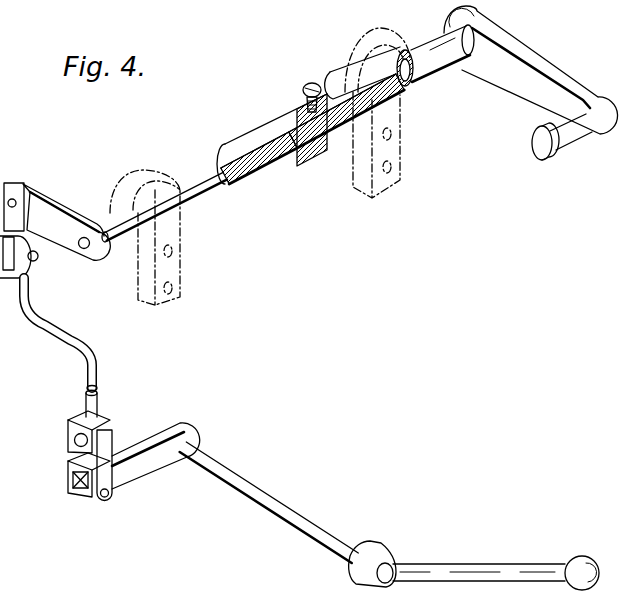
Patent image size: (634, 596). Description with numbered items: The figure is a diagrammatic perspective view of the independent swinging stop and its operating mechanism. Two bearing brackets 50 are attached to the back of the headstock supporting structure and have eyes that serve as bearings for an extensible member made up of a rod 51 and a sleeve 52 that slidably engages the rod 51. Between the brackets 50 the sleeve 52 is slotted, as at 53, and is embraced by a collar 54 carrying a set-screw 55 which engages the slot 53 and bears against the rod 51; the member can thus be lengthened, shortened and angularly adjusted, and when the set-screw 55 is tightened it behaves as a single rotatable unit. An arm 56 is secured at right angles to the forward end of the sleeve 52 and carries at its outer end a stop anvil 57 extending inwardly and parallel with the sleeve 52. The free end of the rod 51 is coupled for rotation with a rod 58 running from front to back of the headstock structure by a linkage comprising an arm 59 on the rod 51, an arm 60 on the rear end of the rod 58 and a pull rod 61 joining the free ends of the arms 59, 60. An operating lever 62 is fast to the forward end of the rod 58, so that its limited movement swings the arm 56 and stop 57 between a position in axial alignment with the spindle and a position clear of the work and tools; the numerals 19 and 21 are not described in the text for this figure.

The shaft 19 is at (353, 0).
The tube 21 is at (412, 0).
The bearing bracket 50 is at (163, 275).
The rod 51 is at (123, 230).
The sleeve 52 is at (253, 173).
The slot 53 is at (300, 115).
The collar 54 is at (287, 107).
The set-screw 55 is at (322, 85).
The arm 56 is at (505, 70).
The stop anvil 57 is at (570, 138).
The rod 58 is at (293, 518).
The arm 59 is at (50, 217).
The arm 60 is at (145, 462).
The pull rod 61 is at (89, 362).
The operating lever 62 is at (417, 569).